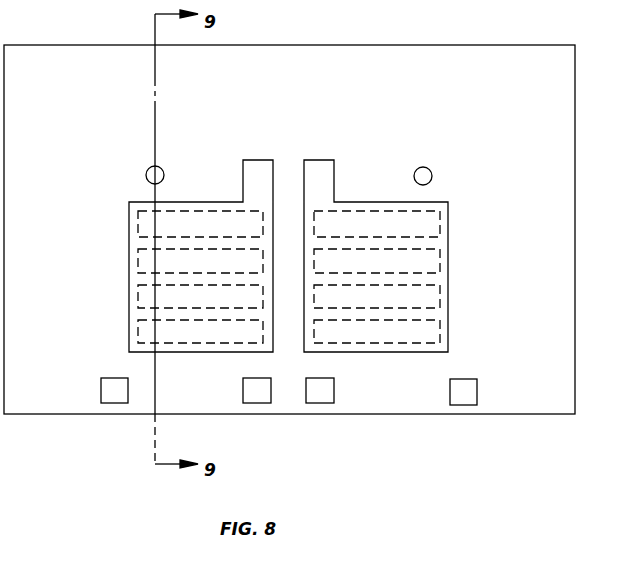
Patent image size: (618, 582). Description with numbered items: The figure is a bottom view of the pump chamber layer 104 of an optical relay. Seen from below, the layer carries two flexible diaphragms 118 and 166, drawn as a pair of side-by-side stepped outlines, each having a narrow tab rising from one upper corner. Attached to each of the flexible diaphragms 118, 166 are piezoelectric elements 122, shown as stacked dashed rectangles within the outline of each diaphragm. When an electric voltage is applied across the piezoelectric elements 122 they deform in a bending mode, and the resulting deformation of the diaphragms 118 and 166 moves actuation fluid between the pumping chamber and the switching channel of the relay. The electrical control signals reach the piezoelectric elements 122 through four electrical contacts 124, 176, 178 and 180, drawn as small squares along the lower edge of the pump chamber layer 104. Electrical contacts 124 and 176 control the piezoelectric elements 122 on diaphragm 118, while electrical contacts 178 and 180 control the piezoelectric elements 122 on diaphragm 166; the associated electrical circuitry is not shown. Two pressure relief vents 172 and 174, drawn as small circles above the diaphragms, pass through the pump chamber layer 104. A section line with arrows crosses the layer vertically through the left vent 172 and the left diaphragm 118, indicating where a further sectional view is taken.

The pump chamber layer 104 is at (342, 45).
The flexible diaphragm 118 is at (215, 353).
The flexible diaphragm 166 is at (398, 353).
The piezoelectric elements 122 is at (143, 220).
The pressure relief vent 172 is at (150, 167).
The pressure relief vent 174 is at (430, 168).
The electrical contact 176 is at (111, 398).
The electrical contact 124 is at (258, 398).
The electrical contact 178 is at (322, 398).
The electrical contact 180 is at (462, 400).